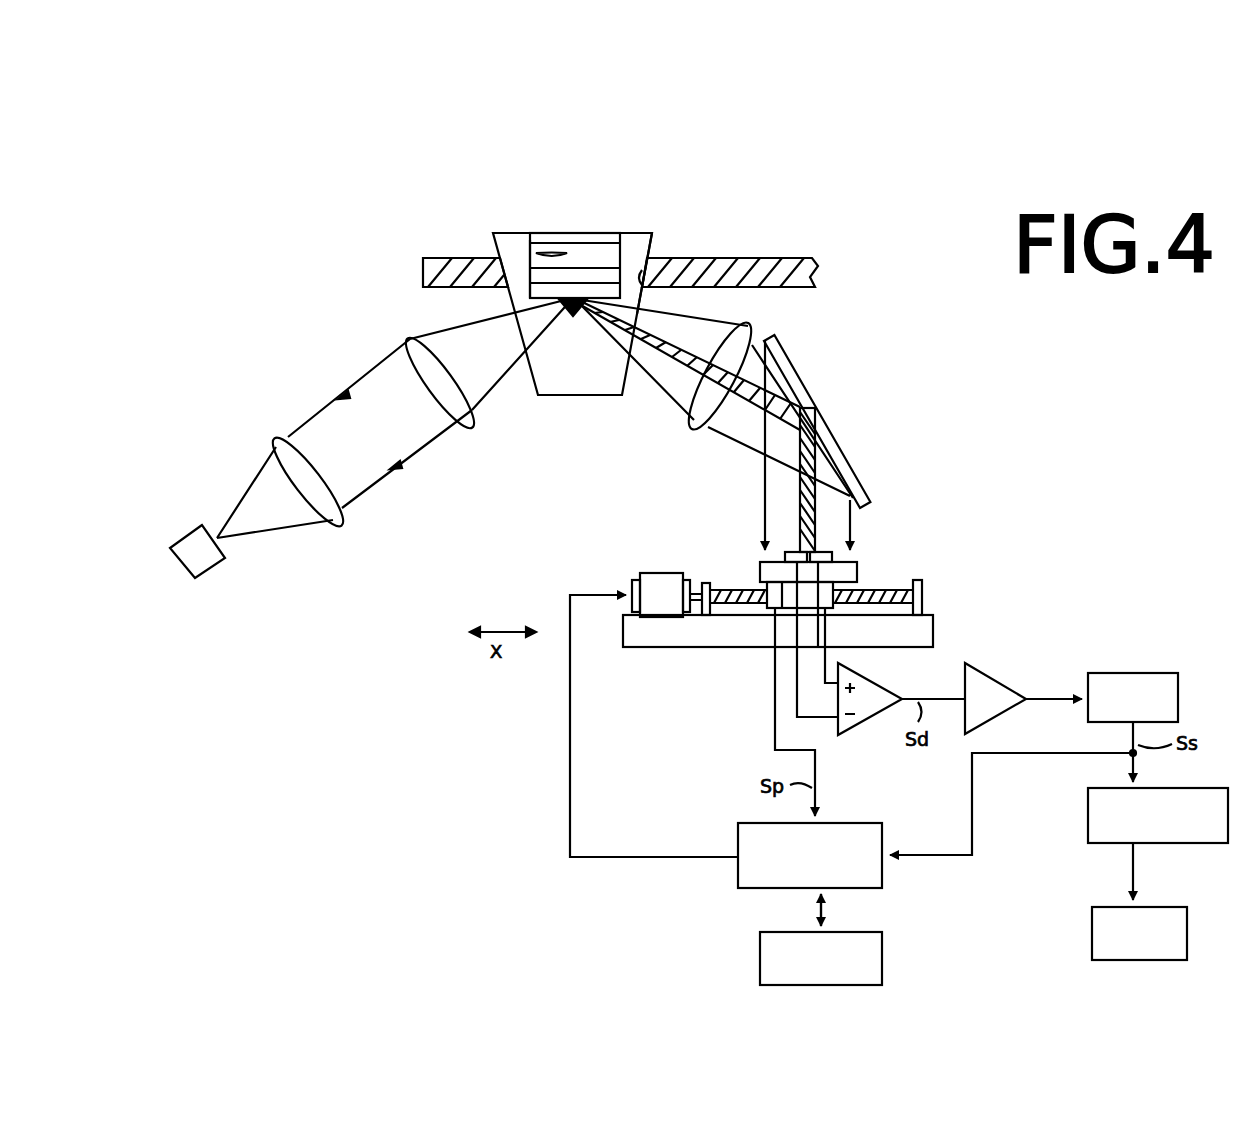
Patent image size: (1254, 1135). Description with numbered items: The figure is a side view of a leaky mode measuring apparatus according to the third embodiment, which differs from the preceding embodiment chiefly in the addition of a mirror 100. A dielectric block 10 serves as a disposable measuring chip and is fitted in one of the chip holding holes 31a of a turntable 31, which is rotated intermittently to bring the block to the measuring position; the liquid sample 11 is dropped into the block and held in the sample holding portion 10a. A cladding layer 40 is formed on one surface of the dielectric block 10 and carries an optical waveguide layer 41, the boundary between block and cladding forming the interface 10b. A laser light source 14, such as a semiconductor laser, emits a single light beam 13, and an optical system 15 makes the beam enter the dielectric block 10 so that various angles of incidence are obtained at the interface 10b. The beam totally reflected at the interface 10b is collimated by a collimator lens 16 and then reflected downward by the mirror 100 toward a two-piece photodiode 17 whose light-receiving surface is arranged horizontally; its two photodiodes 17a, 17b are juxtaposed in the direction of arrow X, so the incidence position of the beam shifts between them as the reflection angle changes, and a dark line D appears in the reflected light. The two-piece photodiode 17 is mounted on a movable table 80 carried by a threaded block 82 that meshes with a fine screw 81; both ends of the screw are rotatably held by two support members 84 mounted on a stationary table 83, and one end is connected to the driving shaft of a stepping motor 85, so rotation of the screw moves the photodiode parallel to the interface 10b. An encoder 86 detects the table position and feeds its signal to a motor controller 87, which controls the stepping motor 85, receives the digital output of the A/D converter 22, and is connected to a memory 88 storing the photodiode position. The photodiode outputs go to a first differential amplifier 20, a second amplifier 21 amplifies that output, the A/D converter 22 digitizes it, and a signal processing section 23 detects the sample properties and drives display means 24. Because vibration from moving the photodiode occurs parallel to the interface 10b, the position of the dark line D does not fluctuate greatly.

The dielectric block 10 is at (582, 412).
The sample holding portion 10a is at (632, 232).
The interface 10b is at (628, 290).
The liquid sample 11 is at (578, 253).
The light beam 13 is at (252, 482).
The laser light source 14 is at (200, 525).
The optical system 15 is at (367, 516).
The collimator lens 16 is at (748, 322).
The two-piece photodiode 17 is at (792, 528).
The photodiode 17a is at (762, 522).
The photodiode 17b is at (827, 548).
The first differential amplifier 20 is at (880, 680).
The second amplifier 21 is at (1000, 685).
The A/D converter 22 is at (1150, 672).
The signal processing section 23 is at (1088, 820).
The display means 24 is at (1092, 935).
The turntable 31 is at (752, 252).
The chip holding hole 31a is at (640, 300).
The cladding layer 40 is at (530, 292).
The optical waveguide layer 41 is at (527, 262).
The movable table 80 is at (858, 572).
The fine screw 81 is at (733, 588).
The threaded block 82 is at (880, 590).
The stationary table 83 is at (930, 637).
The support member 84 is at (705, 583).
The stepping motor 85 is at (660, 573).
The encoder 86 is at (770, 608).
The motor controller 87 is at (866, 822).
The memory 88 is at (882, 953).
The mirror 100 is at (840, 443).
The dark line D is at (682, 362).